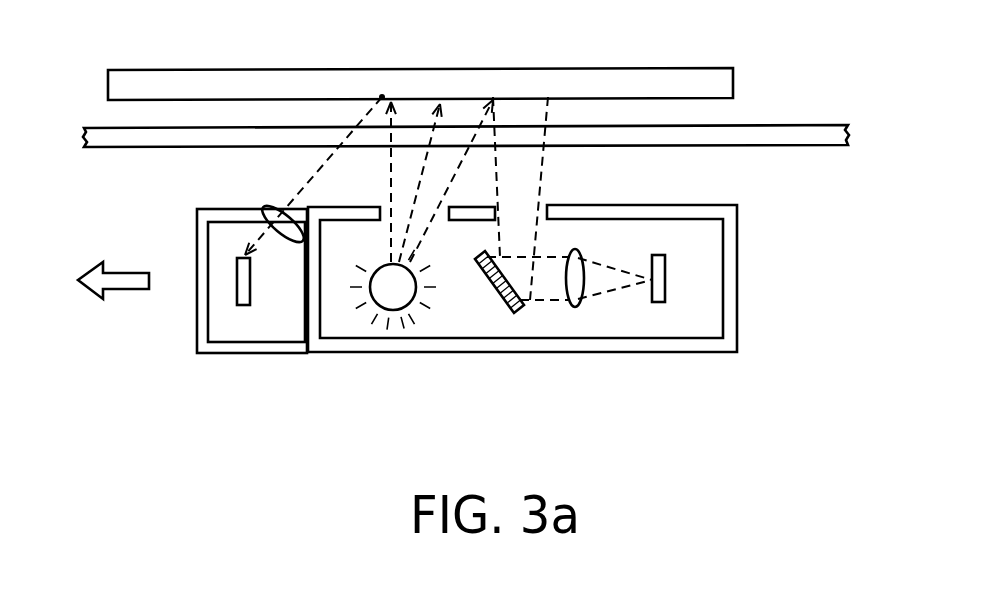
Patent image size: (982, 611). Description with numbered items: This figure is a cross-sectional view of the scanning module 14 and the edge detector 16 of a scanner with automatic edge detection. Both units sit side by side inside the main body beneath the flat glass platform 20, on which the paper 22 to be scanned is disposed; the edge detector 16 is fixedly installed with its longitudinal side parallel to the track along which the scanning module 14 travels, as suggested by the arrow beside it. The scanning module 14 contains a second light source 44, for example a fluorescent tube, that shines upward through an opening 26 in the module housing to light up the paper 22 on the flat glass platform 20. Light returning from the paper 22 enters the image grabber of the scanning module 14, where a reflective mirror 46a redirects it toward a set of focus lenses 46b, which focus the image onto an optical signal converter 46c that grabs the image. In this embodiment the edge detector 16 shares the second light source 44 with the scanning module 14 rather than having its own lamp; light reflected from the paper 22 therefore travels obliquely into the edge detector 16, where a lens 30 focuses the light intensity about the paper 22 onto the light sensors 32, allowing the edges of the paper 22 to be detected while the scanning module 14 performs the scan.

The scanning module 14 is at (738, 255).
The edge detector 16 is at (201, 228).
The flat glass platform 20 is at (785, 133).
The paper 22 is at (688, 78).
The aperture 26 is at (553, 250).
The lens 30 is at (278, 210).
The light sensors 32 is at (240, 292).
The second light source 44 is at (397, 312).
The reflective mirror 46a is at (516, 314).
The set of focus lenses 46b is at (580, 305).
The optical signal converter 46c is at (665, 293).